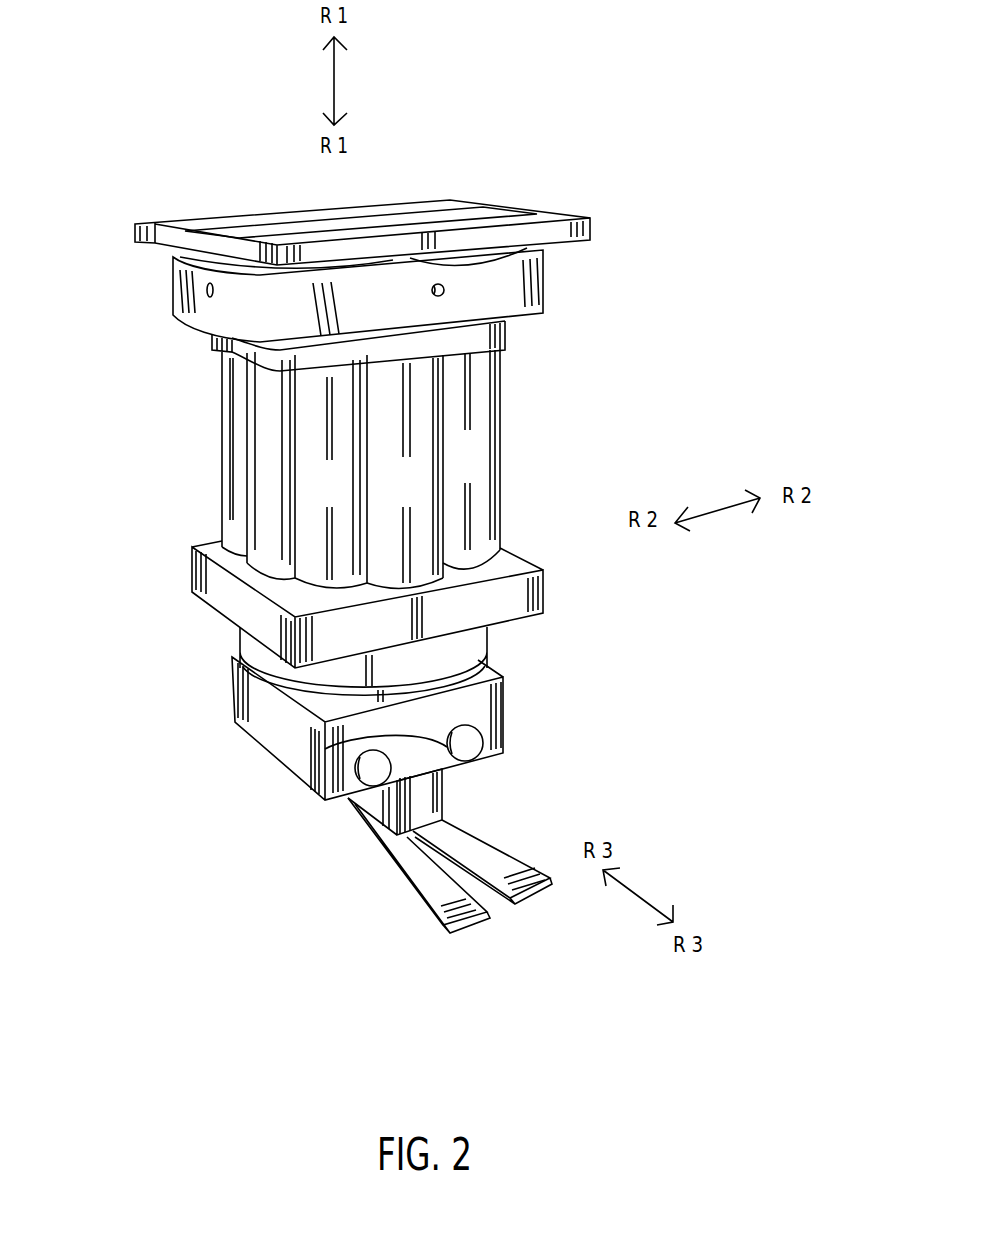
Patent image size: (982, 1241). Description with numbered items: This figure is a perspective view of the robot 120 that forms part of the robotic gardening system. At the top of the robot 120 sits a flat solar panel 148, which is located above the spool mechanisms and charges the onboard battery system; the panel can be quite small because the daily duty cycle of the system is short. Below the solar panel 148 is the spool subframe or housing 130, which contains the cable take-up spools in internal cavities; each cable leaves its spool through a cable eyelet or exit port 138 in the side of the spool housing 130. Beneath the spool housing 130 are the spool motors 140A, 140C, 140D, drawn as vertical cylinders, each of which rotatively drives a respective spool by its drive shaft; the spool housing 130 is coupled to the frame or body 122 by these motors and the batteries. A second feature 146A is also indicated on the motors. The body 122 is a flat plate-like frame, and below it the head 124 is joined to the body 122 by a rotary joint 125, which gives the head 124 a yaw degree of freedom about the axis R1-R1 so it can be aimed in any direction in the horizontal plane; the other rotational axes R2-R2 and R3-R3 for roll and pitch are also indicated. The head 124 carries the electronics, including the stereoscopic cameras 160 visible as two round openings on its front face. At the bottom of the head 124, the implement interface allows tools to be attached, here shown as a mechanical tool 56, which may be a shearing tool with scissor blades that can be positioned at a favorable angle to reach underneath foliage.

The robot 120 is at (551, 172).
The solar panel 148 is at (384, 212).
The spool housing 130 is at (544, 301).
The exit port 138 is at (207, 290).
The spool motor 140A is at (227, 440).
The spool motor 140C is at (477, 435).
The spool motor 140D is at (316, 539).
The cylinder groove 146A is at (258, 490).
The body 122 is at (547, 602).
The rotary joint 125 is at (488, 648).
The head 124 is at (247, 698).
The stereoscopic cameras 160 is at (357, 768).
The mechanical tool 56 is at (445, 829).